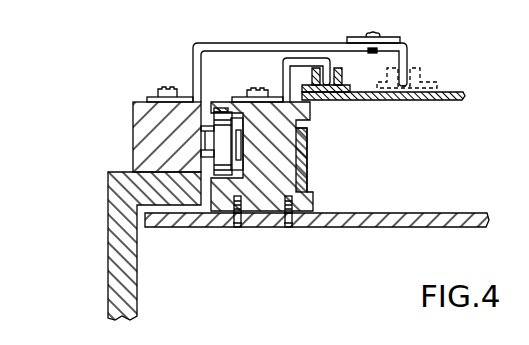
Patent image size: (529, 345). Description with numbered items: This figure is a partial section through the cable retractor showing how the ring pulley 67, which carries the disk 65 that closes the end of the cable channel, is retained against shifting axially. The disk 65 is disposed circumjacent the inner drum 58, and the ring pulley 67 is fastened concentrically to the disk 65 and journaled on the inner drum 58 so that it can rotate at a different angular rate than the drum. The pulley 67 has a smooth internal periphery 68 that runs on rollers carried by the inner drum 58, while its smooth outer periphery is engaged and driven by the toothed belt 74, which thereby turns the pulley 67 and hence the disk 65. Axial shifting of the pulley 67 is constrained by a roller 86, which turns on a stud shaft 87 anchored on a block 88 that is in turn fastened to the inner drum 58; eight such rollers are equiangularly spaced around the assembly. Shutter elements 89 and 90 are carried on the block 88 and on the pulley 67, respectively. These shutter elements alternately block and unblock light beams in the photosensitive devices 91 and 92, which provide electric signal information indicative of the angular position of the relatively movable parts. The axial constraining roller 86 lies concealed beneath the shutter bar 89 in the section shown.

The inner drum 58 is at (108, 265).
The disk 65 is at (357, 228).
The ring-type pulley 67 is at (270, 197).
The smooth internal periphery 68 is at (235, 103).
The toothed belt 74 is at (307, 155).
The roller 86 is at (218, 102).
The stud shaft 87 is at (201, 130).
The block 88 is at (143, 142).
The shutter element 89 is at (332, 43).
The shutter element 90 is at (302, 50).
The photosensitive device 91 is at (422, 92).
The photosensitive device 92 is at (345, 103).